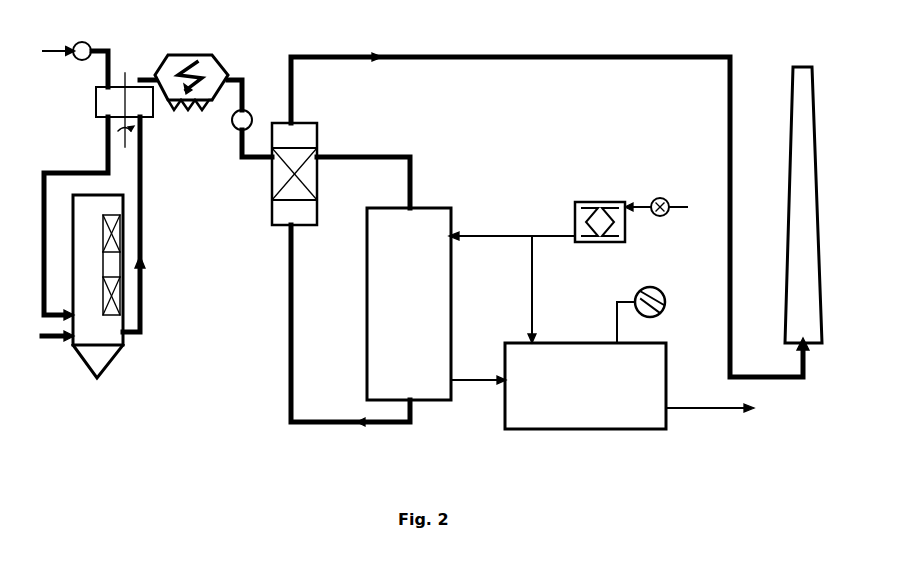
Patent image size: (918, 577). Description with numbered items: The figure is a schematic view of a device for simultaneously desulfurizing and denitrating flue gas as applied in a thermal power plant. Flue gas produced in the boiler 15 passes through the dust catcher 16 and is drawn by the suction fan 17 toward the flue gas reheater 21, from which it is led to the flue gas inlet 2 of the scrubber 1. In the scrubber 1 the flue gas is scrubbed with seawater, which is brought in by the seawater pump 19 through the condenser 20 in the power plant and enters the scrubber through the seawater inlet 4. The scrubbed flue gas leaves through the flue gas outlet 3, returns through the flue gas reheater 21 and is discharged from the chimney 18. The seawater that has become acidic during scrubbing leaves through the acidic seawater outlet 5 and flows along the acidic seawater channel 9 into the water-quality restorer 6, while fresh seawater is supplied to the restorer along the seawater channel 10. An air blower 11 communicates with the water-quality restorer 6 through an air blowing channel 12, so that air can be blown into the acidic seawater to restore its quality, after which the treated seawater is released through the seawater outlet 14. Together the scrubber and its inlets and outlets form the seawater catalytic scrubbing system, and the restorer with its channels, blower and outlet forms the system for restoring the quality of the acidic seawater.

The scrubber 1 is at (388, 304).
The flue gas inlet of the scrubber 2 is at (400, 167).
The flue gas outlet of the scrubber 3 is at (371, 344).
The seawater inlet of the scrubber 4 is at (512, 208).
The acidic seawater outlet of the scrubber 5 is at (469, 410).
The water-quality restorer 6 is at (585, 413).
The acidic seawater channel 9 is at (496, 346).
The seawater channel 10 is at (507, 289).
The air blower 11 is at (667, 288).
The air blowing channel 12 is at (598, 304).
The seawater outlet 14 is at (710, 377).
The boiler 15 is at (123, 307).
The dust catcher 16 is at (197, 119).
The suction fan 17 is at (257, 94).
The chimney 18 is at (786, 205).
The seawater pump 19 is at (650, 183).
The condenser in the power plant 20 is at (583, 196).
The flue gas reheater 21 is at (320, 153).